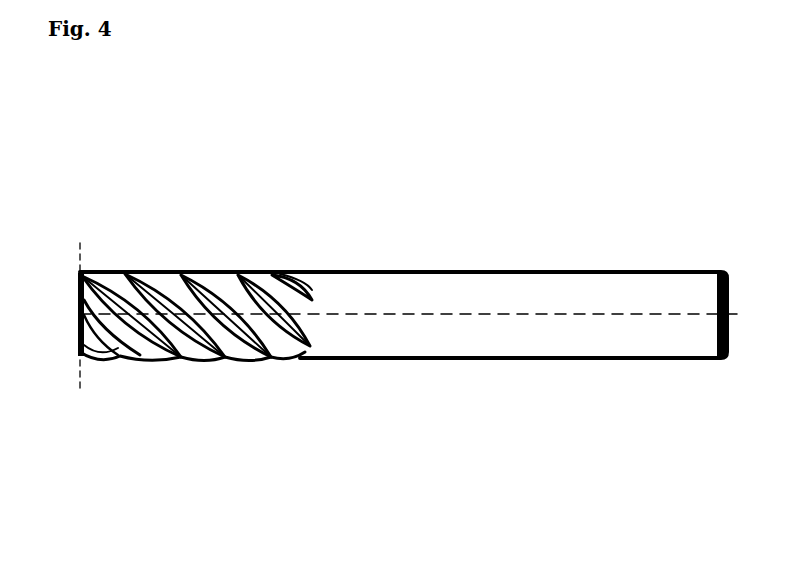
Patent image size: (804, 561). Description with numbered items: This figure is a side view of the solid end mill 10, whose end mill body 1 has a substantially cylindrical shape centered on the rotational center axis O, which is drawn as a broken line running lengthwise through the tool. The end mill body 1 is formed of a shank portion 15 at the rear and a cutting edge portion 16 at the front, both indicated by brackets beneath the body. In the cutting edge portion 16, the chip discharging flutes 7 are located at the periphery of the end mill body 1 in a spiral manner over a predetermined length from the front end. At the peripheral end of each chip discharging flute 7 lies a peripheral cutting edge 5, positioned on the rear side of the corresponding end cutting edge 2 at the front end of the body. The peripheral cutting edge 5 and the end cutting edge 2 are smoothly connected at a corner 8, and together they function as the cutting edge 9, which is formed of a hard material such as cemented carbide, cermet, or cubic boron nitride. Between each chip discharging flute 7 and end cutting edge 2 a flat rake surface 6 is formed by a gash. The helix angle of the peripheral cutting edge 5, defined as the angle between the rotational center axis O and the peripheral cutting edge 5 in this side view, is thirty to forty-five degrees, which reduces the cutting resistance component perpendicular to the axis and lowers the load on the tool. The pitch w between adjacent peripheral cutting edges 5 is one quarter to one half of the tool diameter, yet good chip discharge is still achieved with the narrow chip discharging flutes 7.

The end mill body 1 is at (387, 341).
The end mill 10 is at (480, 244).
The shank portion 15 is at (722, 384).
The cutting edge portion 16 is at (176, 321).
The cutting edge 9 is at (113, 182).
The corner 8 is at (80, 272).
The chip discharging flute 7 is at (147, 359).
The peripheral cutting edge 5 is at (95, 272).
The end cutting edge 2 is at (78, 293).
The rake surface 6 is at (80, 342).
The pitch w is at (168, 291).
The rotational center axis O is at (415, 300).